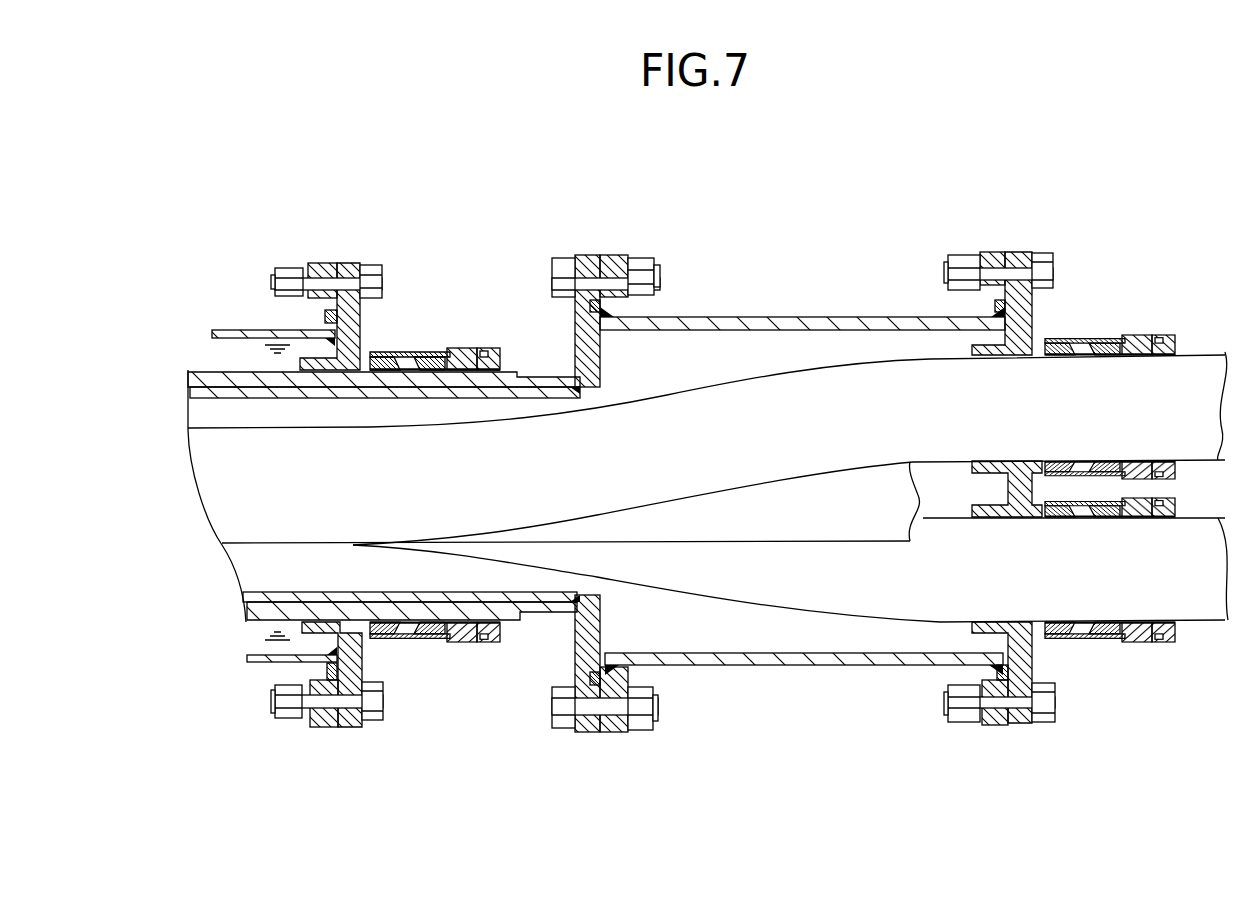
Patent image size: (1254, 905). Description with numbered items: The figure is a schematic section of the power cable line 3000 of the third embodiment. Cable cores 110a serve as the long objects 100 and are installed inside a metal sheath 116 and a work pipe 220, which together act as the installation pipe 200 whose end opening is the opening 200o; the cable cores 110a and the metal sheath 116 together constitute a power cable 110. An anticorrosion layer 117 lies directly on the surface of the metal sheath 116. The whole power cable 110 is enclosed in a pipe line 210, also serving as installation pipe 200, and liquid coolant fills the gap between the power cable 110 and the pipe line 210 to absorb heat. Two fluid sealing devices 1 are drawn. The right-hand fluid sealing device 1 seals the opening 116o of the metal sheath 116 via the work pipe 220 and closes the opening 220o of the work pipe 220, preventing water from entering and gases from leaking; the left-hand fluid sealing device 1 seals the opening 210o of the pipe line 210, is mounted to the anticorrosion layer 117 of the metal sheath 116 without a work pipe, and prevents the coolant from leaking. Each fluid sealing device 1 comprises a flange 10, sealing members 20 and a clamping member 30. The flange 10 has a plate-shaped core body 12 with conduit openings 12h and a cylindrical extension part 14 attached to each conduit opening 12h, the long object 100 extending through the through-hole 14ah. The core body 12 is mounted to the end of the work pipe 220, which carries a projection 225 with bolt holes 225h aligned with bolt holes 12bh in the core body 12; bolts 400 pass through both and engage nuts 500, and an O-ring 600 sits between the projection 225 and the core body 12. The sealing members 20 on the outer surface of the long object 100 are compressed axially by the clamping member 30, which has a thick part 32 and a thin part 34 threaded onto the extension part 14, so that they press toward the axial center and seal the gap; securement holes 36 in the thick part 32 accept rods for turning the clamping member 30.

The fluid sealing device 1 is at (472, 247).
The flange 10 is at (463, 251).
The core body 12 is at (352, 318).
The conduit opening 12h is at (336, 625).
The bolt hole 12bh is at (361, 705).
The extension part 14 is at (372, 352).
The through-hole 14ah is at (365, 620).
The sealing member 20 is at (393, 355).
The clamping member 30 is at (533, 264).
The thick part 32 is at (482, 348).
The thin part 34 is at (452, 349).
The securement hole 36 is at (481, 643).
The long object 100 is at (775, 240).
The power cable 110 is at (1160, 801).
The cable core 110a is at (737, 573).
The metal sheath 116 is at (203, 396).
The opening of the metal sheath 116o is at (577, 403).
The anticorrosion layer 117 is at (228, 380).
The installation pipe 200 is at (1153, 831).
The opening of the installation pipe 200o is at (808, 225).
The pipe line 210 is at (252, 663).
The opening of the pipe line 210o is at (268, 330).
The work pipe 220 is at (817, 315).
The opening of the work pipe 220o is at (997, 337).
The projection 225 is at (997, 258).
The bolt hole 225h is at (305, 722).
The bolt 400 is at (372, 273).
The nut 500 is at (960, 262).
The O-ring 600 is at (331, 310).
The power cable line 3000 is at (306, 252).